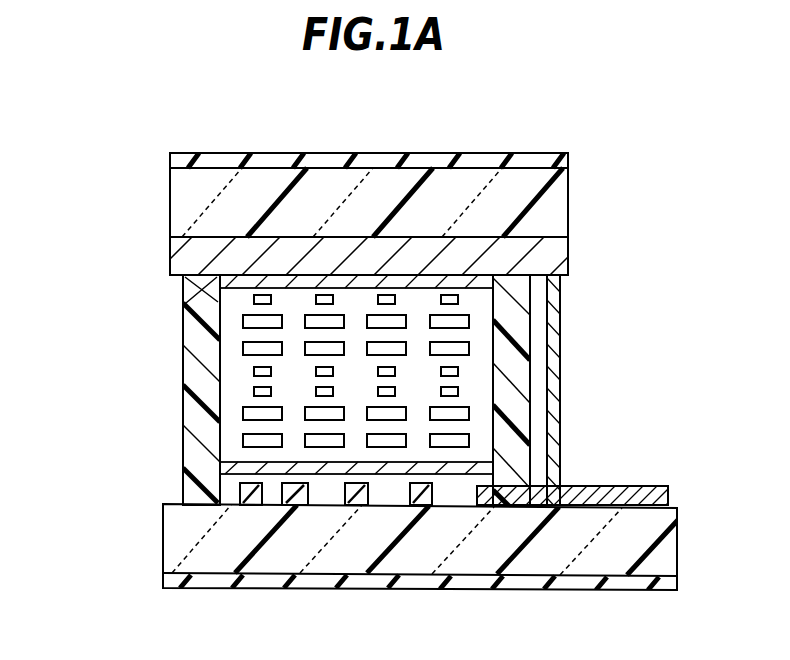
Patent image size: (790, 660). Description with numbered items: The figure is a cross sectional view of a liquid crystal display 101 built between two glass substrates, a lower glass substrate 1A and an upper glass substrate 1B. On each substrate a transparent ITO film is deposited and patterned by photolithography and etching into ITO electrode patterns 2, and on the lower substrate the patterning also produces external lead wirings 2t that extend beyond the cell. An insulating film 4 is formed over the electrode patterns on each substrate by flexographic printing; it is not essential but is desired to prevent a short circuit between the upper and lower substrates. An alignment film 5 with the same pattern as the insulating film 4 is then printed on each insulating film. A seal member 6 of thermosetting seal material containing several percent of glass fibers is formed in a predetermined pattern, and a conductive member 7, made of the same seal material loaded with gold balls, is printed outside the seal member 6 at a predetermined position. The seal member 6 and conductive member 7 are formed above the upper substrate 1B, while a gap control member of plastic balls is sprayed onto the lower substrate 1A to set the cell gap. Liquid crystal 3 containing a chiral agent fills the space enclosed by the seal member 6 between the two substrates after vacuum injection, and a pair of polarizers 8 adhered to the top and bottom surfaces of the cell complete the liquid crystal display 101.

The liquid crystal display 101 is at (143, 98).
The glass substrate 1A is at (672, 548).
The glass substrate 1B is at (562, 203).
The ITO electrode patterns 2 is at (565, 251).
The external lead wirings 2t is at (670, 495).
The liquid crystal 3 is at (468, 414).
The insulating film 4 is at (182, 276).
The alignment film 5 is at (183, 313).
The seal member 6 is at (190, 372).
The conductive member 7 is at (555, 357).
The polarizers 8 is at (175, 162).